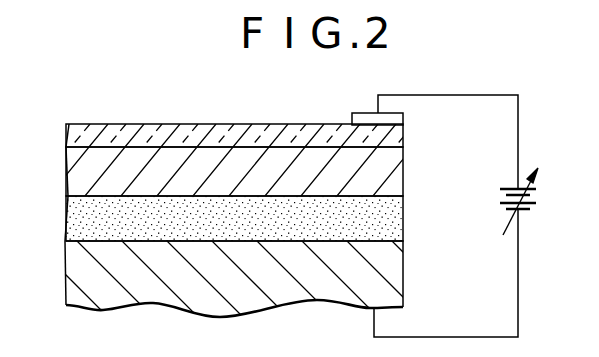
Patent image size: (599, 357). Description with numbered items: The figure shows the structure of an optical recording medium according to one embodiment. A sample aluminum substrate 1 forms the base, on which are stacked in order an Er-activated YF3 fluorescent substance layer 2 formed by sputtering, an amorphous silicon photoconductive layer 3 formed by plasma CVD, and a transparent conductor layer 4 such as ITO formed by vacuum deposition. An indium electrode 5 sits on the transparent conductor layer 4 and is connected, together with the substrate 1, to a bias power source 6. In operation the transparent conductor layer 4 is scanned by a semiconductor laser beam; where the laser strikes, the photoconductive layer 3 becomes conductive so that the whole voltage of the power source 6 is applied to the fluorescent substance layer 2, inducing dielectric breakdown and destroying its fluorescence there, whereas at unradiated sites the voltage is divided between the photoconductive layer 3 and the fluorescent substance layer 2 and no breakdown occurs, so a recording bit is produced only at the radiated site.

The substrate 1 is at (150, 297).
The fluorescent substance layer 2 is at (71, 213).
The photoconductive layer 3 is at (78, 174).
The transparent conductor layer 4 is at (183, 129).
The electrode 5 is at (361, 113).
The bias power source 6 is at (499, 197).